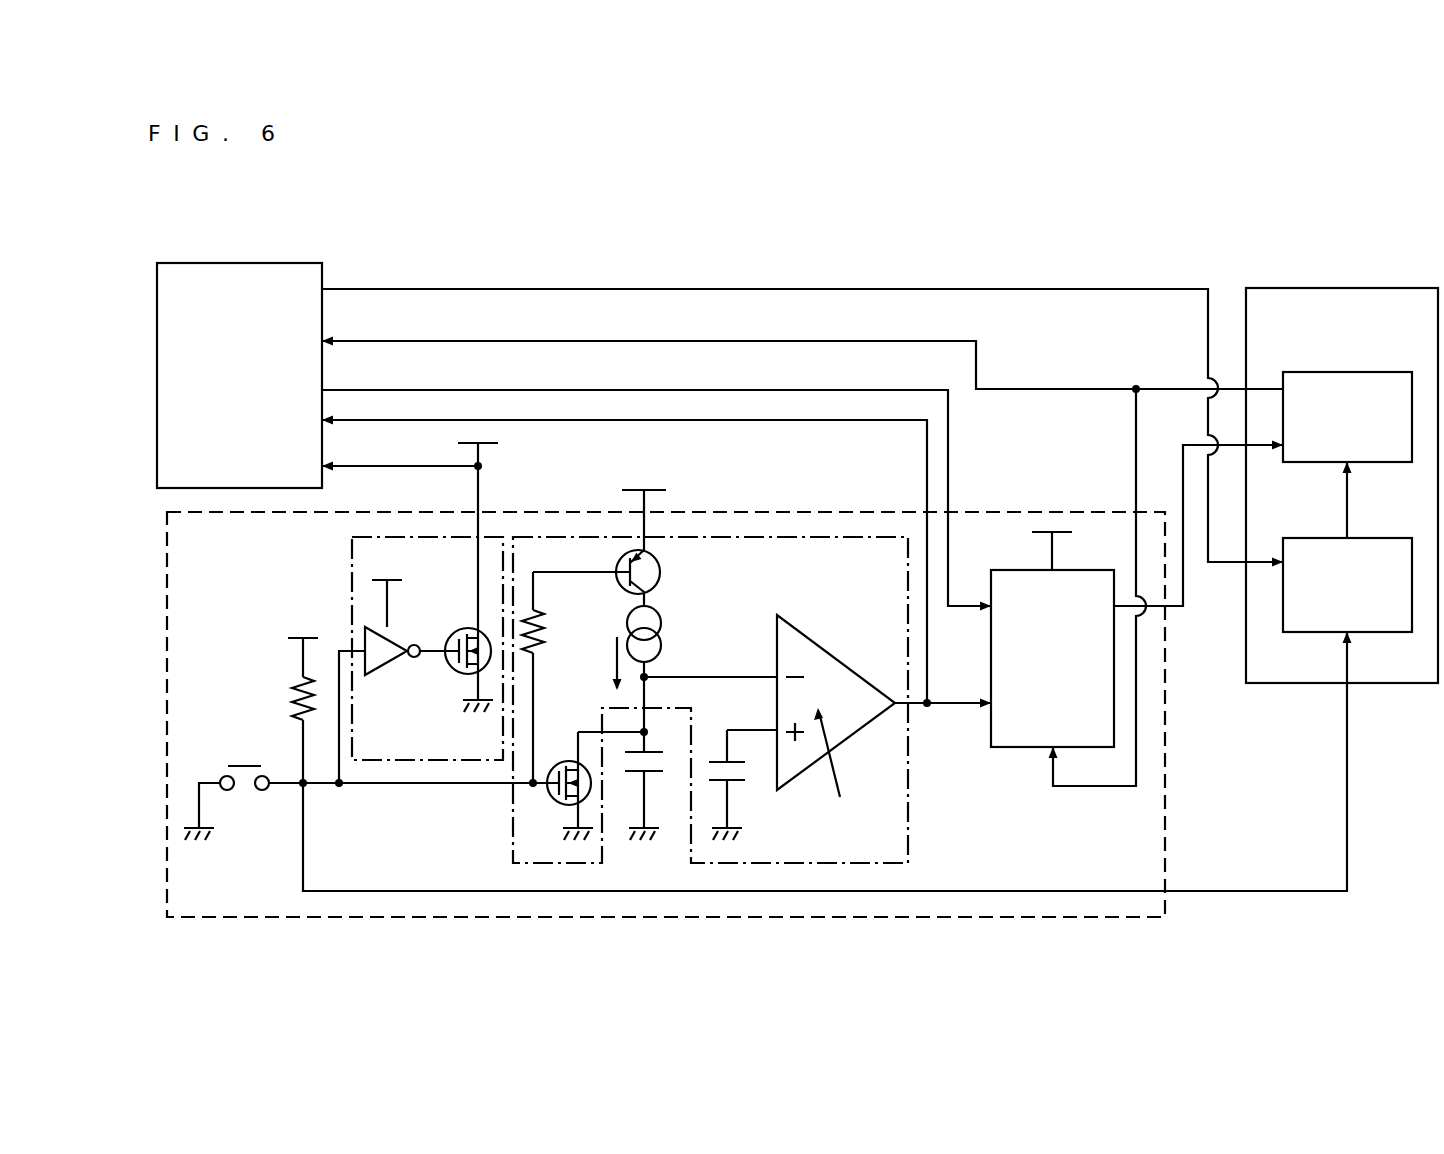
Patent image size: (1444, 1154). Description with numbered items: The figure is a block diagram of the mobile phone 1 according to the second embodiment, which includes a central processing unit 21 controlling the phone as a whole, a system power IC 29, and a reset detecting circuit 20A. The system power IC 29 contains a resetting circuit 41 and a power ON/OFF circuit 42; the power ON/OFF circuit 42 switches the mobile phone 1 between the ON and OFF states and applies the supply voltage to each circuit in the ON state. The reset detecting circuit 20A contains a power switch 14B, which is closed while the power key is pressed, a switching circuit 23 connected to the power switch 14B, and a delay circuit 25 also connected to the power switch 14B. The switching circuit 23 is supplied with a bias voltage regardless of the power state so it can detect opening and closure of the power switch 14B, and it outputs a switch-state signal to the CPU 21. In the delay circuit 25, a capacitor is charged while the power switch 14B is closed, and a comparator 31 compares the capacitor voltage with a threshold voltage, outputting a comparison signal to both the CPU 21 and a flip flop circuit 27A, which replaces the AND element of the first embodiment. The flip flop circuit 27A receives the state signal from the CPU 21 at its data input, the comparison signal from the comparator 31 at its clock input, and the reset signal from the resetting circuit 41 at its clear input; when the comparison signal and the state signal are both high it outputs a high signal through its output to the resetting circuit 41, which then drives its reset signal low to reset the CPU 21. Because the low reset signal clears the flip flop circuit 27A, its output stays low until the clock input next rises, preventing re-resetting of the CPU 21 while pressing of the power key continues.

The mobile phone 1 is at (184, 198).
The central processing unit (CPU) 21 is at (262, 263).
The switching circuit 23 is at (352, 558).
The power switch 14B is at (242, 790).
The delay circuit 25 is at (752, 661).
The comparator 31 is at (833, 657).
The flip flop circuit 27A is at (1015, 570).
The reset detecting circuit 20A is at (1158, 807).
The system power IC 29 is at (1368, 288).
The resetting circuit 41 is at (1373, 372).
The power ON/OFF circuit 42 is at (1373, 538).